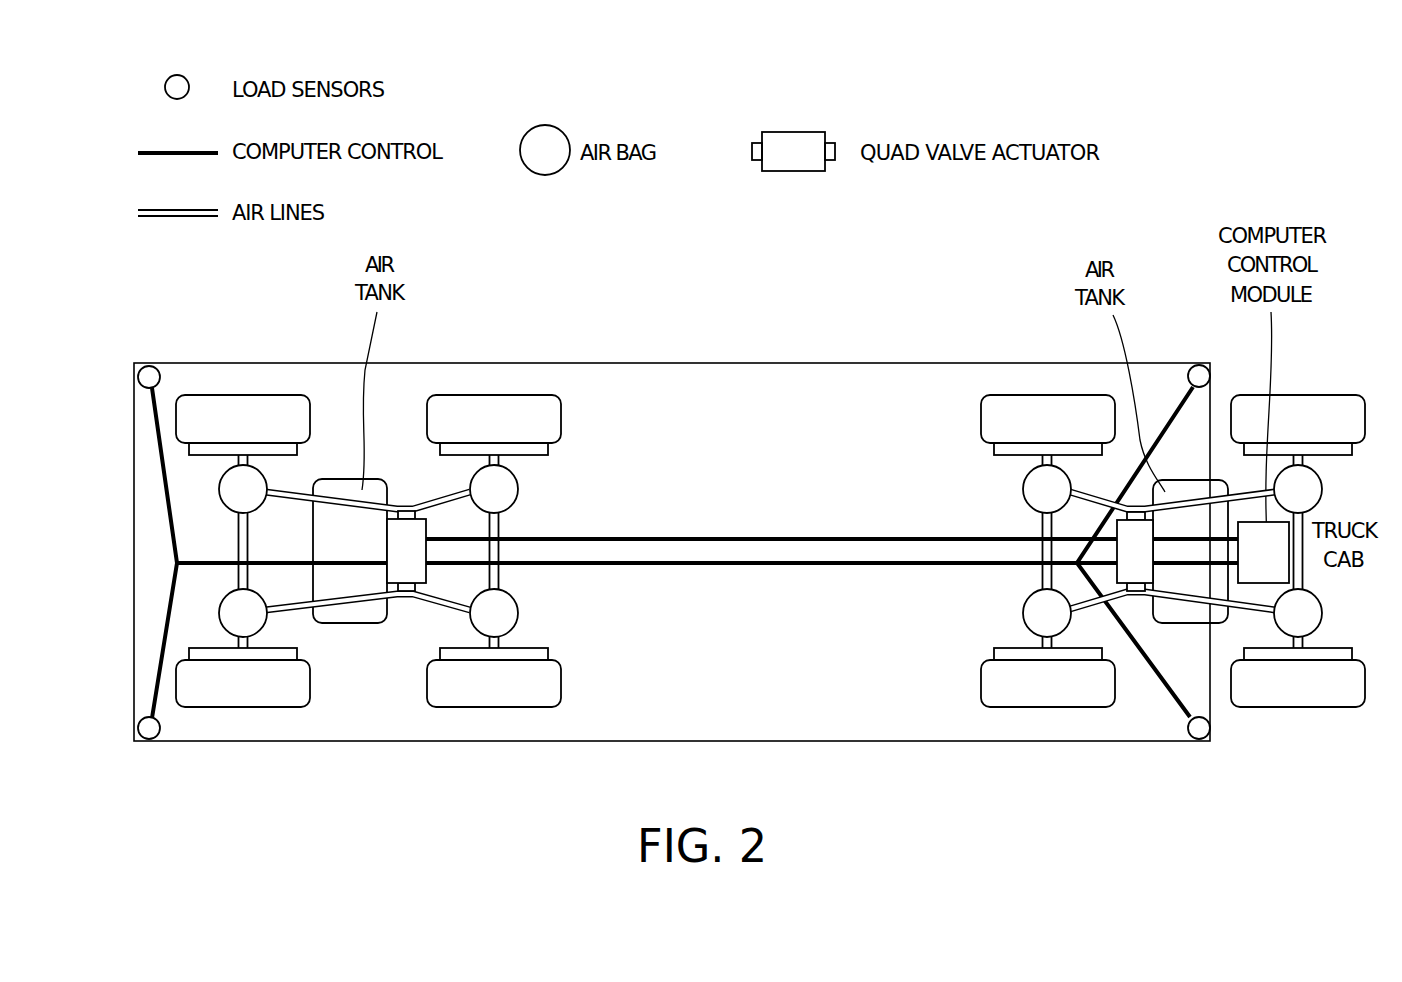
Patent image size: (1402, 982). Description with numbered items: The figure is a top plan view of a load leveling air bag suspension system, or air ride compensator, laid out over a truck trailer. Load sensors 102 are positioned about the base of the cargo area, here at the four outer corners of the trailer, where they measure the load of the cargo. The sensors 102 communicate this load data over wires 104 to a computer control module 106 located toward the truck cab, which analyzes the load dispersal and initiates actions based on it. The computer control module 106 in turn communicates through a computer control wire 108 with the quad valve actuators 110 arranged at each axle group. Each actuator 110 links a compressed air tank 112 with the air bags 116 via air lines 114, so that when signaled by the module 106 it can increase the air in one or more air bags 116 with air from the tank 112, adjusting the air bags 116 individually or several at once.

The load sensors 102 is at (150, 372).
The wires 104 is at (723, 568).
The computer control module 106 is at (1262, 578).
The computer control wire 108 is at (733, 538).
The actuator 110 is at (405, 532).
The compressed air tank 112 is at (333, 487).
The air lines 114 is at (292, 610).
The air bags 116 is at (227, 612).